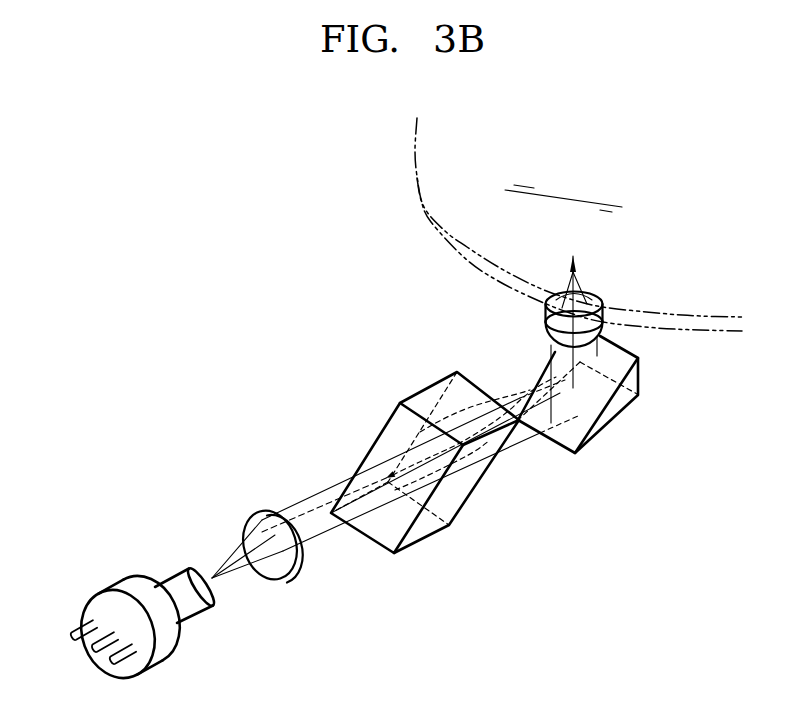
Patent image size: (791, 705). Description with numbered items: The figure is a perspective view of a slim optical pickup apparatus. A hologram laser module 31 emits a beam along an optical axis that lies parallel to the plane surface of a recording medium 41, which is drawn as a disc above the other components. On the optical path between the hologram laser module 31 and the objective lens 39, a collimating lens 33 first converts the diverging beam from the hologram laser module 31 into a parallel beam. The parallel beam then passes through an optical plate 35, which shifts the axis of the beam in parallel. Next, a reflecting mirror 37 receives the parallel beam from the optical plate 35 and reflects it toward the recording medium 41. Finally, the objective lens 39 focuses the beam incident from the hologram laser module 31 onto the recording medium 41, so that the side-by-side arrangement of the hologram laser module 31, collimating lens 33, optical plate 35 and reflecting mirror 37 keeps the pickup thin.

The hologram laser module 31 is at (125, 584).
The collimating lens 33 is at (263, 520).
The optical plate 35 is at (427, 394).
The reflecting mirror 37 is at (597, 438).
The objective lens 39 is at (547, 318).
The recording medium 41 is at (421, 208).